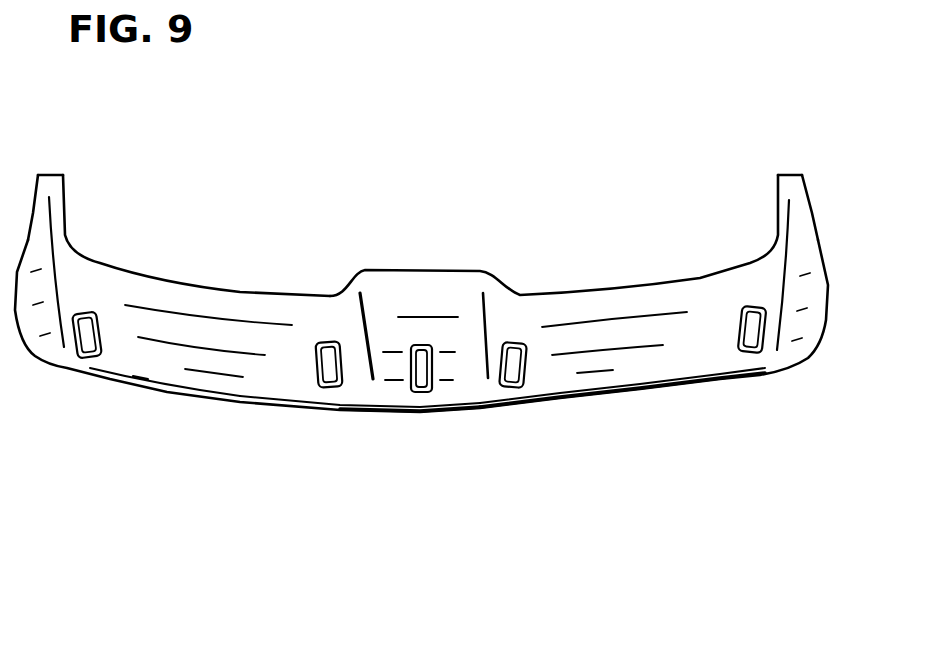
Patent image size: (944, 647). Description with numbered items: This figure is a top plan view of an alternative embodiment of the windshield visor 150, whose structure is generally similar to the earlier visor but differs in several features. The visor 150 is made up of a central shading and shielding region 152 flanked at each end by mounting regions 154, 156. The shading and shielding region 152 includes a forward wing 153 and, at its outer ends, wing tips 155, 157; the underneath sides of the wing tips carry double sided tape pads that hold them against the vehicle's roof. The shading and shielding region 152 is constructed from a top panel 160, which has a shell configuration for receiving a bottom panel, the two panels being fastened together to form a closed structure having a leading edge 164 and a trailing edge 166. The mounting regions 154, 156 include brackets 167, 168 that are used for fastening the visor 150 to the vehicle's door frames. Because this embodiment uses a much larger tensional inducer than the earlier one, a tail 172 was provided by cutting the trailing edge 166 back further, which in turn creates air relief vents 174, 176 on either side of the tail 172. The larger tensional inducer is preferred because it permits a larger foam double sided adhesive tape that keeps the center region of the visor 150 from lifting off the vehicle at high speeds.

The windshield visor 150 is at (742, 175).
The shading and shielding region 152 is at (530, 222).
The forward wing 153 is at (627, 376).
The mounting region 154 is at (742, 218).
The wing tip 155 is at (788, 181).
The mounting region 156 is at (100, 151).
The wing tip 157 is at (55, 181).
The top panel 160 is at (155, 360).
The leading edge 164 is at (317, 410).
The trailing edge 166 is at (283, 292).
The bracket 167 is at (807, 183).
The bracket 168 is at (32, 182).
The tail 172 is at (440, 281).
The air relief vent 174 is at (613, 277).
The air relief vent 176 is at (197, 252).